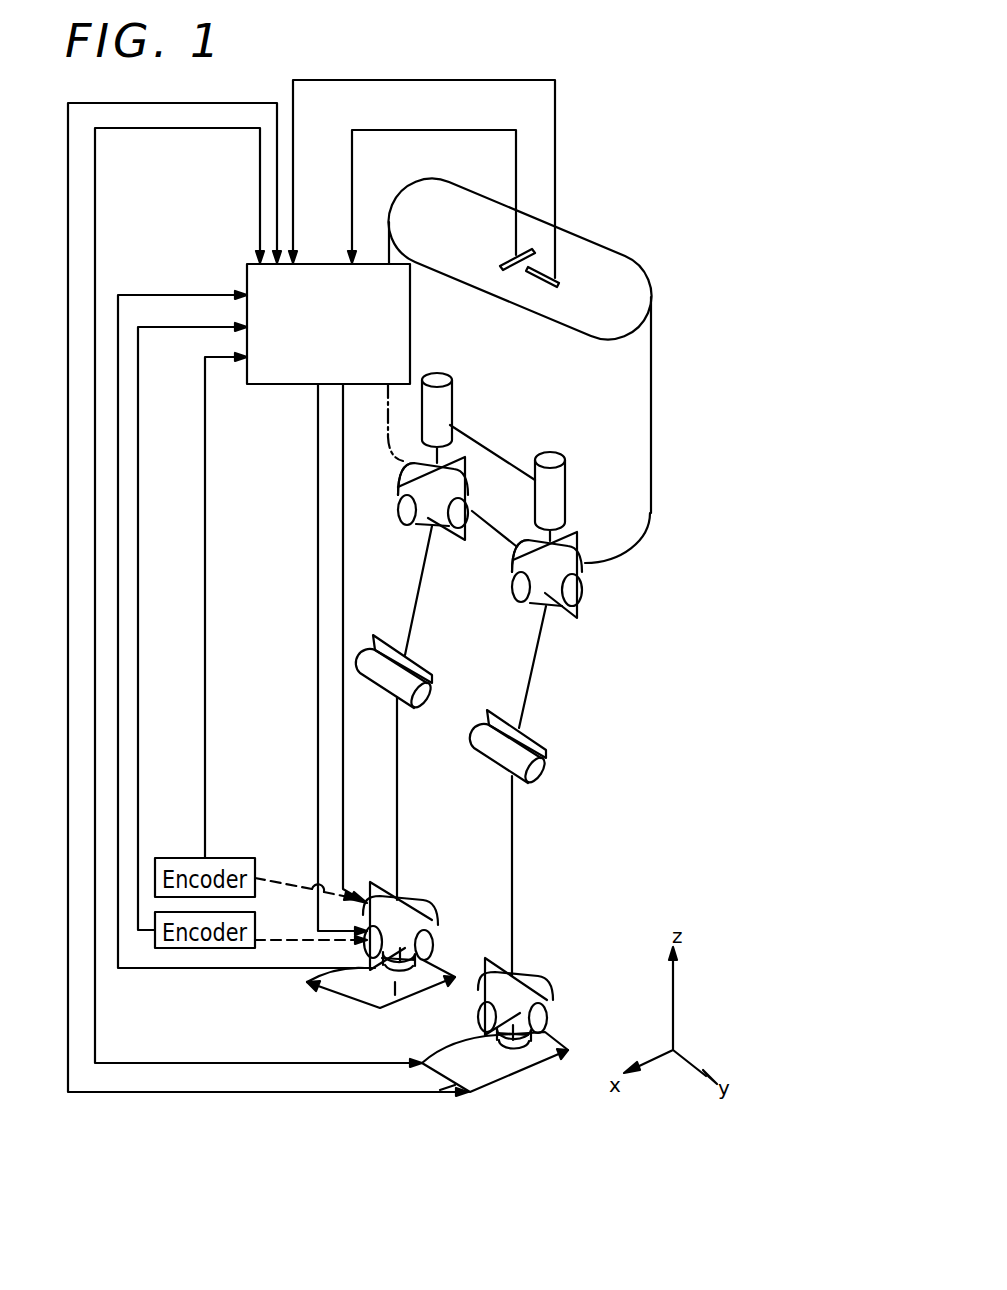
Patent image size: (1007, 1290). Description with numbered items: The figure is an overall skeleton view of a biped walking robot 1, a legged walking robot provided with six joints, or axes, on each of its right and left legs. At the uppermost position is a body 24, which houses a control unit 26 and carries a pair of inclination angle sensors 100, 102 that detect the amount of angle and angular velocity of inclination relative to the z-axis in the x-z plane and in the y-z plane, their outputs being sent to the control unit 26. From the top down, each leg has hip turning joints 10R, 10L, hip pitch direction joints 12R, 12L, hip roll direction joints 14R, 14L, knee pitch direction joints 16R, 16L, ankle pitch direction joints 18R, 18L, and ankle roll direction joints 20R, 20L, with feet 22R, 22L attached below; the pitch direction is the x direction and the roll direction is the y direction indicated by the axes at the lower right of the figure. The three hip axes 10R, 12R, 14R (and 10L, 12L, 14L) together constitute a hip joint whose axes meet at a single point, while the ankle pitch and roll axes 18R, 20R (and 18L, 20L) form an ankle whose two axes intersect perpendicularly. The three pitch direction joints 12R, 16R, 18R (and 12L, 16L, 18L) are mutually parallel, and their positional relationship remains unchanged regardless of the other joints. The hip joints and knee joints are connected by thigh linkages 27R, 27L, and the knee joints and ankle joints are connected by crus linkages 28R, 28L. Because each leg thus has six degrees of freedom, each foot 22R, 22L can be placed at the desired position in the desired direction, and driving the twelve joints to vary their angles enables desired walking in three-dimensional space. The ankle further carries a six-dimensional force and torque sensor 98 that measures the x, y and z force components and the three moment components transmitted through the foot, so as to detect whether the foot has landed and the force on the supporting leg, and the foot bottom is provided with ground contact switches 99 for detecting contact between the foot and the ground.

The biped walking robot 1 is at (594, 235).
The body 24 is at (647, 437).
The control unit 26 is at (247, 278).
The inclination angle sensor 100 is at (505, 266).
The inclination angle sensor 102 is at (557, 283).
The hip turning joint 10R is at (437, 378).
The hip turning joint 10L is at (552, 457).
The hip pitch direction joint 12R is at (467, 503).
The hip pitch direction joint 12L is at (583, 585).
The hip roll direction joint 14R is at (405, 522).
The hip roll direction joint 14L is at (513, 603).
The thigh linkage 27R is at (418, 593).
The thigh linkage 27L is at (532, 677).
The knee pitch direction joint 16R is at (425, 710).
The knee pitch direction joint 16L is at (537, 785).
The crus linkage 28R is at (397, 805).
The crus linkage 28L is at (512, 876).
The ankle roll direction joint 20R is at (418, 897).
The ankle roll direction joint 20L is at (552, 974).
The ankle pitch direction joint 18R is at (428, 962).
The ankle pitch direction joint 18L is at (547, 1030).
The foot 22R is at (350, 992).
The foot 22L is at (500, 1068).
The six-dimensional force and torque sensor 98 is at (395, 995).
The ground contact switch 99 is at (468, 1097).